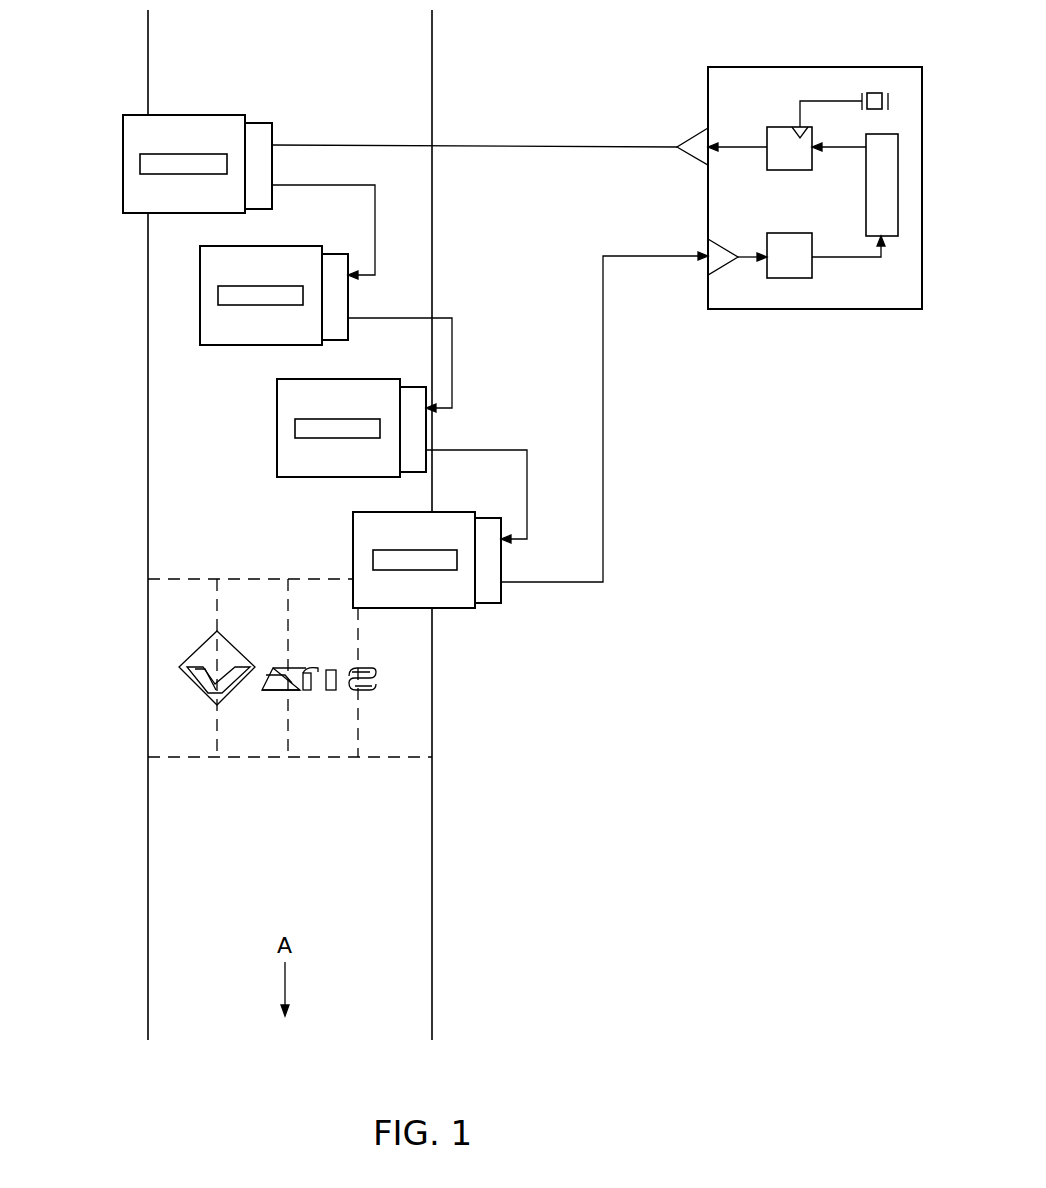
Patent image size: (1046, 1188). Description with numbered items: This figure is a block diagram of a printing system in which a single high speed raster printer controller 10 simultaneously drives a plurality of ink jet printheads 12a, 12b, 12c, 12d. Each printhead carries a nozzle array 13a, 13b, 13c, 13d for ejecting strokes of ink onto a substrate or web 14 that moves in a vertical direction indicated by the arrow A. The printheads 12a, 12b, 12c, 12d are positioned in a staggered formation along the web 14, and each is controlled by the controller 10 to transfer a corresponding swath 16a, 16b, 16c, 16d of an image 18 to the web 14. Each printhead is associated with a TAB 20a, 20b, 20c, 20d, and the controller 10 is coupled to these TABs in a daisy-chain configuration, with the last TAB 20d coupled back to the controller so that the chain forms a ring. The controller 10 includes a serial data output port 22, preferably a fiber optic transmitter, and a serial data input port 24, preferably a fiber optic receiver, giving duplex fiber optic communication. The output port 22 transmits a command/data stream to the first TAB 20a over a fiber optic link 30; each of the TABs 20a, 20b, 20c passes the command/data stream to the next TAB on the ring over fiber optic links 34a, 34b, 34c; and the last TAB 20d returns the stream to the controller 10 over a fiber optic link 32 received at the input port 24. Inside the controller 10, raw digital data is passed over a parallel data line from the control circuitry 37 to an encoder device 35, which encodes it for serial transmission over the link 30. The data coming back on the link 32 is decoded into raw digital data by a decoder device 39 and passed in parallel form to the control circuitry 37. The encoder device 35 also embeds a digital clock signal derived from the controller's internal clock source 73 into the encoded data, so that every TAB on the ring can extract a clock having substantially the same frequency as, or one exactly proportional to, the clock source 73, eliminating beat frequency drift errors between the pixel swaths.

The raster printer controller 10 is at (812, 310).
The ink jet printhead 12a is at (143, 185).
The ink jet printhead 12b is at (232, 330).
The ink jet printhead 12c is at (287, 412).
The ink jet printhead 12d is at (352, 548).
The nozzle array 13a is at (153, 160).
The nozzle array 13b is at (226, 297).
The nozzle array 13c is at (297, 430).
The nozzle array 13d is at (400, 557).
The web 14 is at (176, 536).
The swath 16a is at (176, 725).
The swath 16b is at (258, 733).
The swath 16c is at (329, 733).
The swath 16d is at (407, 707).
The image 18 is at (417, 667).
The TAB 20a is at (258, 123).
The TAB 20b is at (337, 254).
The TAB 20c is at (408, 387).
The TAB 20d is at (505, 603).
The serial data output port 22 is at (694, 138).
The serial data input port 24 is at (720, 270).
The fiber optic link 30 is at (567, 146).
The fiber optic link 32 is at (605, 527).
The fiber optic link 34a is at (375, 232).
The fiber optic link 34b is at (453, 365).
The fiber optic link 34c is at (527, 445).
The encoder device 35 is at (780, 134).
The control circuitry 37 is at (893, 230).
The decoder device 39 is at (790, 282).
The internal clock source 73 is at (875, 93).